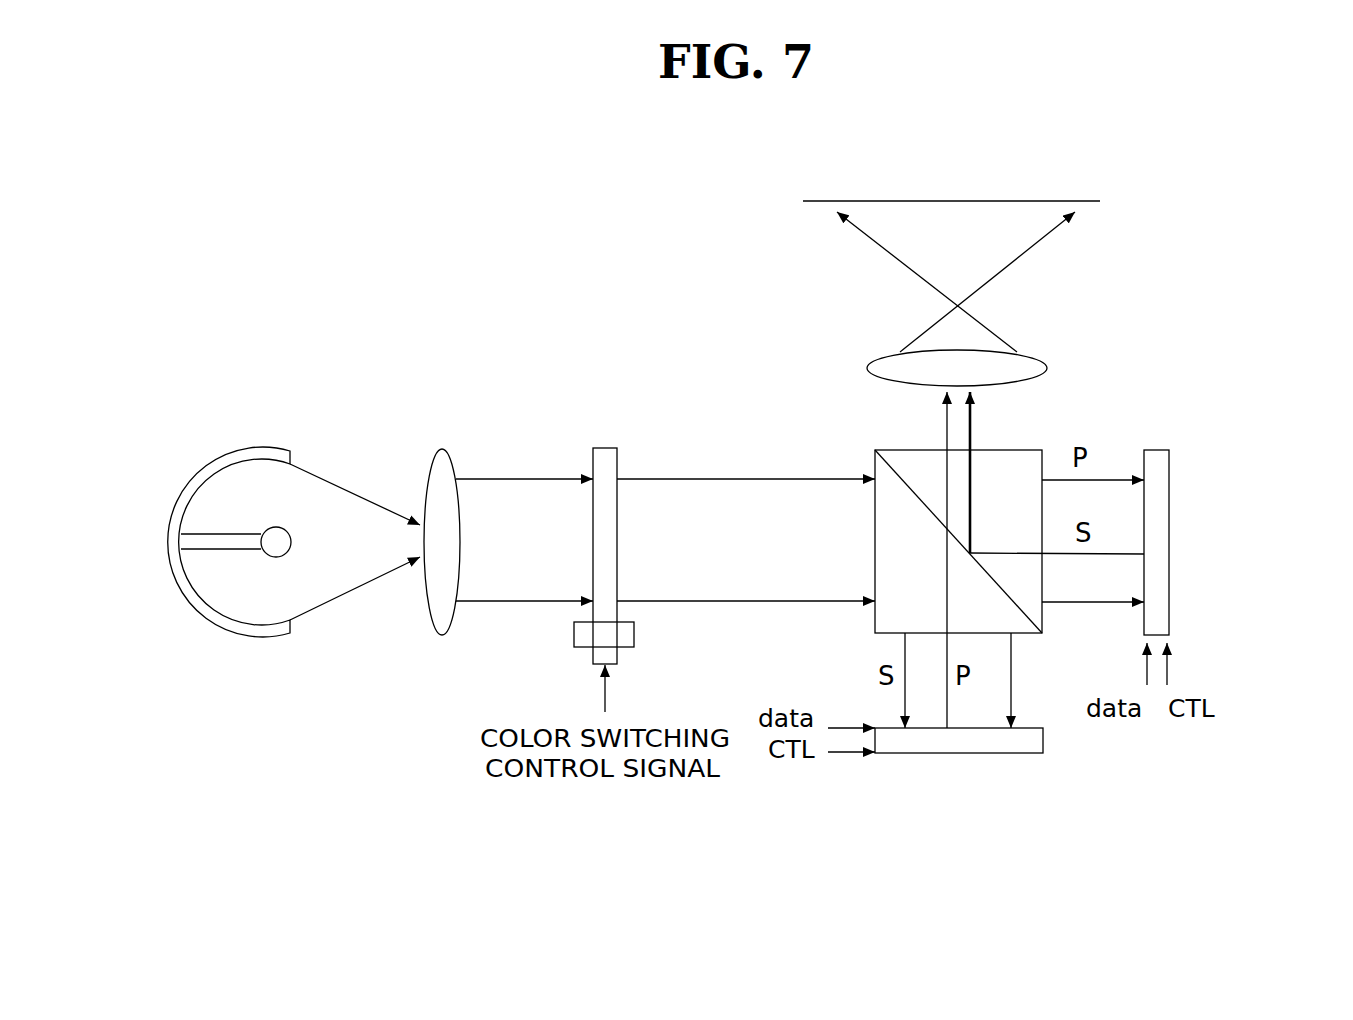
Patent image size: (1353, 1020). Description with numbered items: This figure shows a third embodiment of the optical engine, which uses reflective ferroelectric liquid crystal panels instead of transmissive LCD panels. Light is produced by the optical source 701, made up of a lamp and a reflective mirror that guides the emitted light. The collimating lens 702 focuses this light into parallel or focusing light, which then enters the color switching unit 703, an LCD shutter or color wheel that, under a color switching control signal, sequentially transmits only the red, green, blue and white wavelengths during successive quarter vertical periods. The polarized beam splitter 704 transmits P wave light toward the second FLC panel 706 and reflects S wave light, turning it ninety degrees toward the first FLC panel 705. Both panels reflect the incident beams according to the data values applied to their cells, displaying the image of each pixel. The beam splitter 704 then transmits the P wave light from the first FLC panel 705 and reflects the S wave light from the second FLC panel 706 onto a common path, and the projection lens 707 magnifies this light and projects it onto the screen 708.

The optical source 701 is at (247, 453).
The collimating lens 702 is at (441, 448).
The color switching unit 703 is at (604, 448).
The polarized beam splitter 704 is at (895, 450).
The first FLC panel 705 is at (970, 758).
The second FLC panel 706 is at (1169, 540).
The projection lens 707 is at (1047, 368).
The screen 708 is at (1100, 201).